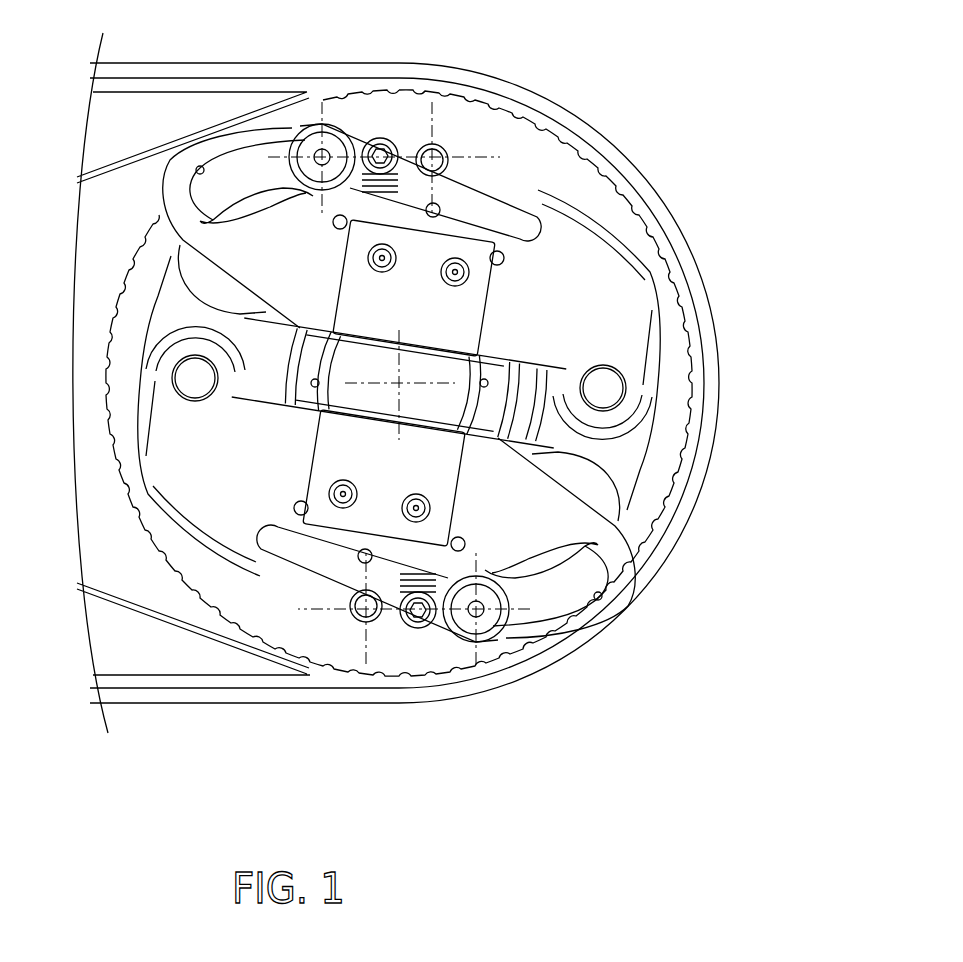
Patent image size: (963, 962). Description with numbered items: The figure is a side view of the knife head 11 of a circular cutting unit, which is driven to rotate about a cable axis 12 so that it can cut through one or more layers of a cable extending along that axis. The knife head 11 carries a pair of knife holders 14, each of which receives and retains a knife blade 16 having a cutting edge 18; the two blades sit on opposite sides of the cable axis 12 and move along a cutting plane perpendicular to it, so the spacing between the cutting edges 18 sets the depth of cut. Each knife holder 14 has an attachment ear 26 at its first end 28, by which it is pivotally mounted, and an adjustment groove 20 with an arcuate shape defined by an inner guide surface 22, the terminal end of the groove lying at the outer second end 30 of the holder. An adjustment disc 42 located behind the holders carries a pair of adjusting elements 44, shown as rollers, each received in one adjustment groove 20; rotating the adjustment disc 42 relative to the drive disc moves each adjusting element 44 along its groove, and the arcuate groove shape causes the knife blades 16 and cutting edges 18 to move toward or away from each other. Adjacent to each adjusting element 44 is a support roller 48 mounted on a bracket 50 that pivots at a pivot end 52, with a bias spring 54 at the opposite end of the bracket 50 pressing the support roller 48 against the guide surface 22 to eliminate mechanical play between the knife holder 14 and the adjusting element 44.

The knife head 11 is at (390, 411).
The cable axis 12 is at (407, 380).
The knife holder 14 is at (613, 278).
The knife blade 16 is at (477, 295).
The cutting edge 18 is at (440, 352).
The adjustment groove 20 is at (513, 203).
The inner guide surface 22 is at (257, 207).
The attachment ear 26 is at (623, 402).
The first end 28 is at (632, 352).
The outer second end 30 is at (177, 183).
The adjustment disc 42 is at (118, 377).
The adjusting element 44 is at (293, 137).
The support roller 48 is at (373, 147).
The bracket 50 is at (437, 157).
The pivot end 52 is at (353, 600).
The bias spring 54 is at (388, 198).